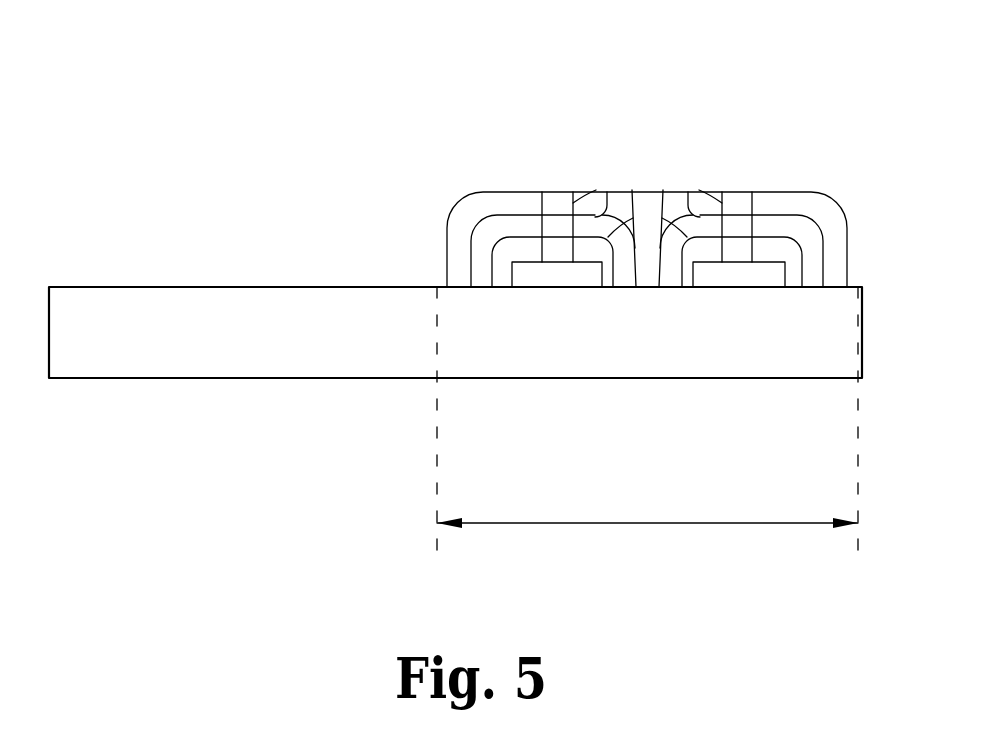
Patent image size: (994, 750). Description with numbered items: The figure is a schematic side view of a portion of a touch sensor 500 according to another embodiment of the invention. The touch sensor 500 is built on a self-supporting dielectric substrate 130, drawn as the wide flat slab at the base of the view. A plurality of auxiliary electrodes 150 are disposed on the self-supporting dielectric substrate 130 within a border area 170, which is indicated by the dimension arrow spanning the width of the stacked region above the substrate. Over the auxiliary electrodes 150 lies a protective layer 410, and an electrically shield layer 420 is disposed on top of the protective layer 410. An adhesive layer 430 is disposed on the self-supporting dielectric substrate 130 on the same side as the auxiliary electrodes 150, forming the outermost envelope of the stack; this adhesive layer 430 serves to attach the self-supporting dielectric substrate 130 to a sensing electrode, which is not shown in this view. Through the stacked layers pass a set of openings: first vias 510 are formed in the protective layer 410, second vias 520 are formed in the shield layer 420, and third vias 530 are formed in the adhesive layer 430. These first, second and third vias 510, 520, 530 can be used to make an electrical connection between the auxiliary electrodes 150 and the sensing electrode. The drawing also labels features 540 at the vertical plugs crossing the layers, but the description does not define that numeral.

The touch sensor 500 is at (206, 135).
The self-supporting dielectric substrate 130 is at (843, 350).
The auxiliary electrodes 150 is at (520, 272).
The border area 170 is at (670, 523).
The protective layer 410 is at (503, 253).
The shield layer 420 is at (500, 227).
The adhesive layer 430 is at (815, 200).
The first vias 510 is at (664, 190).
The second vias 520 is at (688, 190).
The third vias 530 is at (700, 190).
The contact 540 is at (558, 197).